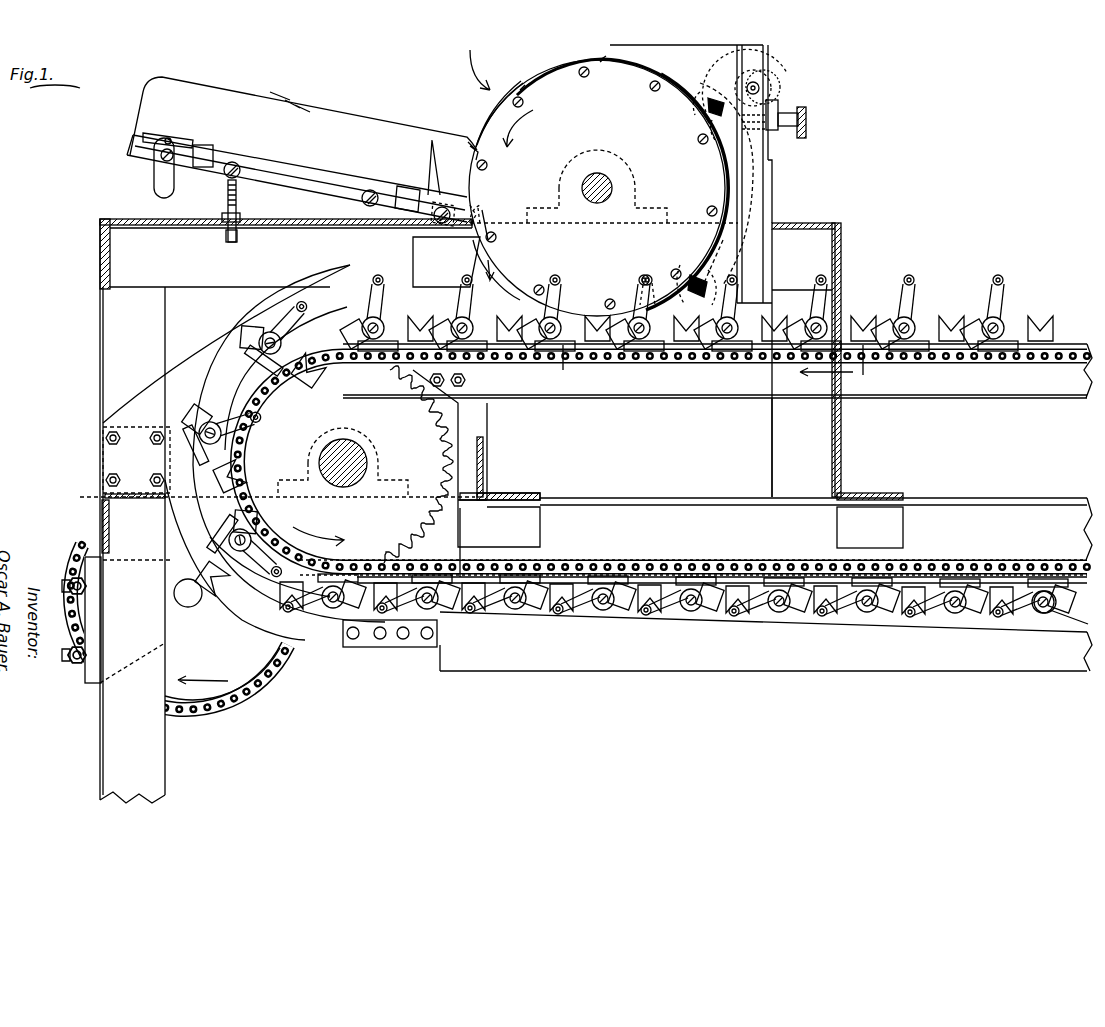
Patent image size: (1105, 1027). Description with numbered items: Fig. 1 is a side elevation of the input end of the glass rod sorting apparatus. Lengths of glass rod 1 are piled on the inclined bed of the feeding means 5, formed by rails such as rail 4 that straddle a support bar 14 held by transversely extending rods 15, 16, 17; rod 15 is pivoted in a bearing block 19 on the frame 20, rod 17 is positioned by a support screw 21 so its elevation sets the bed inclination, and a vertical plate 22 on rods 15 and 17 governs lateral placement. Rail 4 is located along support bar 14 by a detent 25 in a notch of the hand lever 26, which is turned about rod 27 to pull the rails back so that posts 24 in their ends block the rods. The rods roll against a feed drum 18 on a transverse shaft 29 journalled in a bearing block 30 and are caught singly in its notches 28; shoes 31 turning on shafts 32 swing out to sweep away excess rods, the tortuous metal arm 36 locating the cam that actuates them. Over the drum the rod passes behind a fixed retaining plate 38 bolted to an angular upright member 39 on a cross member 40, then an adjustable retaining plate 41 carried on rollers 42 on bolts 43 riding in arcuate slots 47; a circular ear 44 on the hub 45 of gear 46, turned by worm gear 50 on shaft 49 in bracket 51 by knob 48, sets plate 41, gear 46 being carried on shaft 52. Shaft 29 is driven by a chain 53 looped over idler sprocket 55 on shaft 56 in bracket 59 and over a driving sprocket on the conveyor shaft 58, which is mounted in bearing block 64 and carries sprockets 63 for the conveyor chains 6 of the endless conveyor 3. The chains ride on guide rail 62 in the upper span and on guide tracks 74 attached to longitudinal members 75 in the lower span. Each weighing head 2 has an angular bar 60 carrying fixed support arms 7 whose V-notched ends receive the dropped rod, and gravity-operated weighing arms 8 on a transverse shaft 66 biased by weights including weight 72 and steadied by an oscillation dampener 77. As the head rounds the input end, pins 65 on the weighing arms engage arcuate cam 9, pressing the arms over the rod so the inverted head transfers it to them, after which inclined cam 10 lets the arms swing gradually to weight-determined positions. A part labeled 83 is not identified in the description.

The glass rod 1 is at (428, 180).
The weighing head 2 is at (470, 262).
The endless conveyor 3 is at (142, 332).
The inclined rail 4 is at (330, 172).
The feeding means 5 is at (471, 62).
The conveyor chain 6 is at (316, 362).
The support arm 7 is at (500, 360).
The weighing arm 8 is at (375, 300).
The arcuate cam 9 is at (225, 337).
The cam 10 is at (495, 668).
The support bar 14 is at (298, 188).
The rod 15 is at (433, 222).
The rod 16 is at (364, 205).
The rod 17 is at (226, 176).
The feed drum 18 is at (497, 109).
The bearing block 19 is at (405, 212).
The frame 20 is at (98, 222).
The support screw 21 is at (227, 202).
The vertical plate 22 is at (272, 98).
The post 24 is at (480, 200).
The detent 25 is at (168, 137).
The hand lever 26 is at (154, 185).
The rod 27 is at (160, 156).
The notch 28 is at (470, 143).
The transverse shaft 29 is at (612, 180).
The bearing block 30 is at (610, 150).
The shoe 31 is at (478, 137).
The shaft 32 is at (520, 90).
The tortuous metal arm 36 is at (490, 268).
The fixed retaining plate 38 is at (607, 55).
The angular upright member 39 is at (760, 186).
The cross member 40 is at (842, 232).
The adjustable retaining plate 41 is at (763, 52).
The roller 42 is at (712, 112).
The bolt 43 is at (702, 108).
The circular ear 44 is at (752, 150).
The hub 45 is at (759, 82).
The gear 46 is at (775, 97).
The arcuate slot 47 is at (708, 104).
The knob 48 is at (806, 128).
The shaft 49 is at (800, 118).
The worm gear 50 is at (760, 135).
The bracket 51 is at (778, 108).
The supporting shaft 52 is at (775, 83).
The chain 53 is at (262, 690).
The idler sprocket 55 is at (280, 660).
The shaft 56 is at (192, 606).
The conveyor shaft 58 is at (362, 450).
The bracket 59 is at (170, 638).
The angular bar 60 is at (660, 350).
The guide rail 62 is at (565, 399).
The sprocket 63 is at (453, 427).
The bearing block 64 is at (355, 430).
The pin 65 is at (420, 285).
The shaft 66 is at (484, 355).
The weight 72 is at (1058, 603).
The guide track 74 is at (425, 577).
The longitudinal member 75 is at (625, 505).
The oscillation dampener 77 is at (1050, 620).
The pin 83 is at (556, 372).